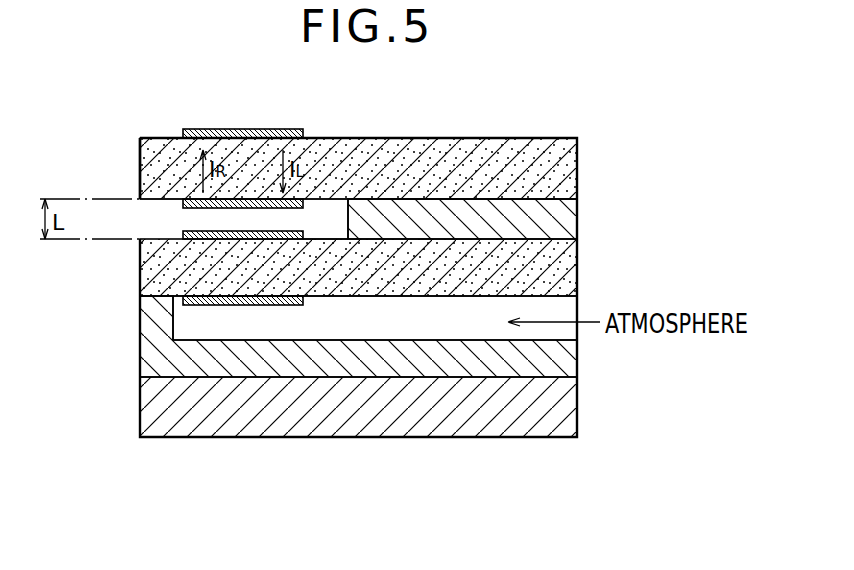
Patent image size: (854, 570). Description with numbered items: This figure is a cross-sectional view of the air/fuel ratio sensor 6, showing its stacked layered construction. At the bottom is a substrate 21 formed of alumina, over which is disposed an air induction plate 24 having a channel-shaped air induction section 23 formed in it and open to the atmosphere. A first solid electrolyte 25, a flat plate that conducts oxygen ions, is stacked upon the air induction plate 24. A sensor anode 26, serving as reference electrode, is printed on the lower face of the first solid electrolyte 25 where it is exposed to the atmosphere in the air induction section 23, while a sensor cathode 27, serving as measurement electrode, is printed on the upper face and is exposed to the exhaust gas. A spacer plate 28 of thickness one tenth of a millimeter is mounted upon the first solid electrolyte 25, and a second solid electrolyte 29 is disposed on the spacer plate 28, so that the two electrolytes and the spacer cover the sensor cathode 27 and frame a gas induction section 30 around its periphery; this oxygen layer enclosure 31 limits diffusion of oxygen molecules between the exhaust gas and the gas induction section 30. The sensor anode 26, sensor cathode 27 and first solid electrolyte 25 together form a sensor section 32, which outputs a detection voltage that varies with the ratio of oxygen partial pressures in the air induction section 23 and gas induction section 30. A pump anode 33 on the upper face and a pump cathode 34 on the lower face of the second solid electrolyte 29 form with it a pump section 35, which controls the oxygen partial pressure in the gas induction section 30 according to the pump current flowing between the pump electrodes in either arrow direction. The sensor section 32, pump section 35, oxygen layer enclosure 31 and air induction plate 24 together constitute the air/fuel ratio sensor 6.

The air/fuel ratio sensor 6 is at (428, 510).
The substrate 21 is at (353, 426).
The air induction section 23 is at (440, 331).
The air induction plate 24 is at (140, 364).
The first solid electrolyte 25 is at (140, 262).
The sensor anode 26 is at (298, 305).
The sensor cathode 27 is at (301, 230).
The spacer plate 28 is at (572, 221).
The second solid electrolyte 29 is at (573, 165).
The gas induction section 30 is at (340, 232).
The oxygen layer enclosure 31 is at (632, 209).
The sensor section 32 is at (125, 298).
The pump anode 33 is at (278, 129).
The pump cathode 34 is at (227, 216).
The pump section 35 is at (130, 172).